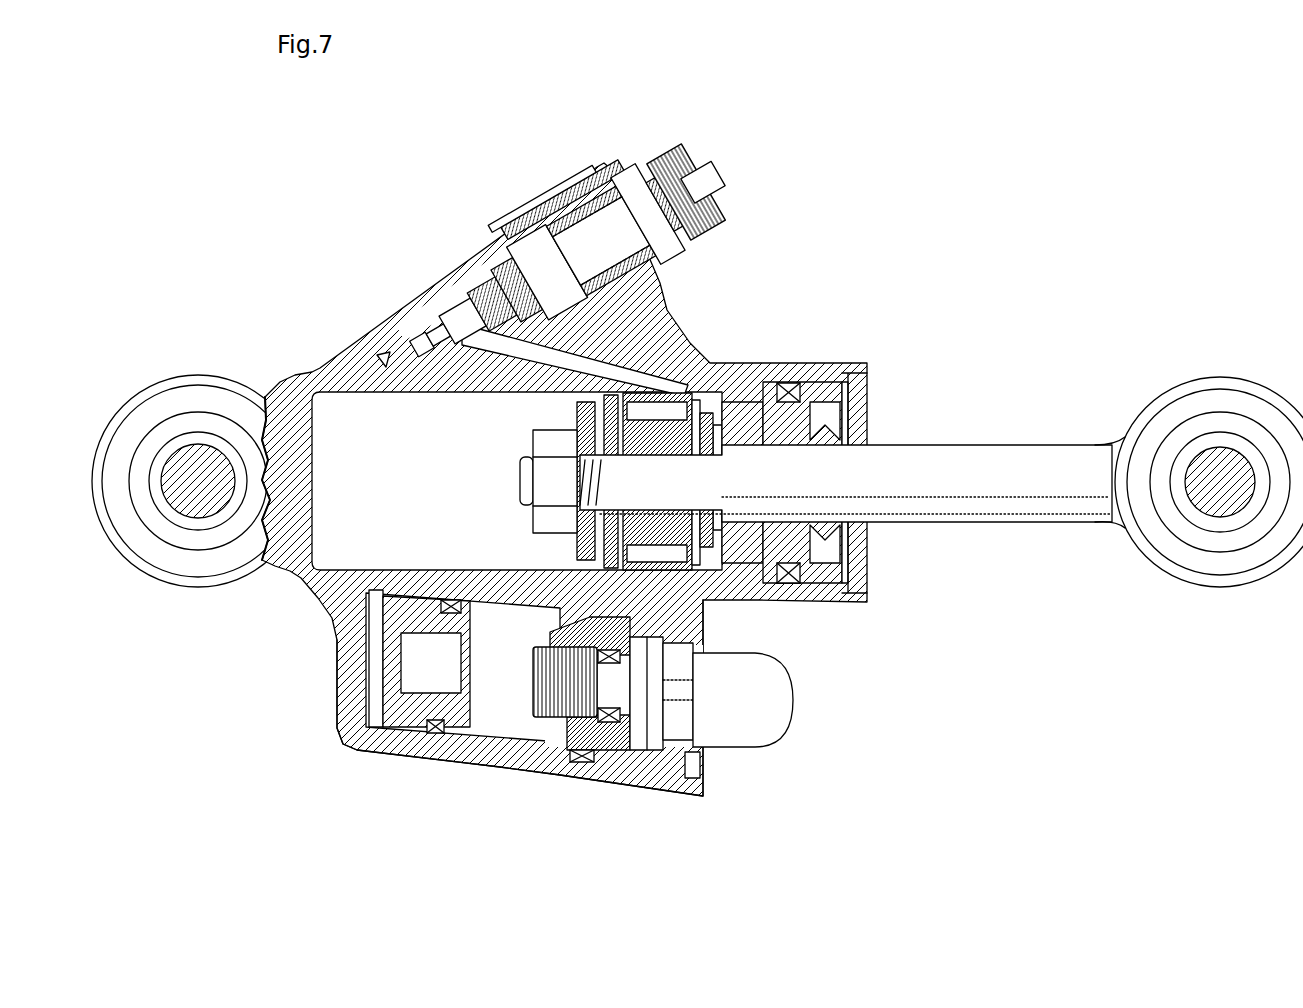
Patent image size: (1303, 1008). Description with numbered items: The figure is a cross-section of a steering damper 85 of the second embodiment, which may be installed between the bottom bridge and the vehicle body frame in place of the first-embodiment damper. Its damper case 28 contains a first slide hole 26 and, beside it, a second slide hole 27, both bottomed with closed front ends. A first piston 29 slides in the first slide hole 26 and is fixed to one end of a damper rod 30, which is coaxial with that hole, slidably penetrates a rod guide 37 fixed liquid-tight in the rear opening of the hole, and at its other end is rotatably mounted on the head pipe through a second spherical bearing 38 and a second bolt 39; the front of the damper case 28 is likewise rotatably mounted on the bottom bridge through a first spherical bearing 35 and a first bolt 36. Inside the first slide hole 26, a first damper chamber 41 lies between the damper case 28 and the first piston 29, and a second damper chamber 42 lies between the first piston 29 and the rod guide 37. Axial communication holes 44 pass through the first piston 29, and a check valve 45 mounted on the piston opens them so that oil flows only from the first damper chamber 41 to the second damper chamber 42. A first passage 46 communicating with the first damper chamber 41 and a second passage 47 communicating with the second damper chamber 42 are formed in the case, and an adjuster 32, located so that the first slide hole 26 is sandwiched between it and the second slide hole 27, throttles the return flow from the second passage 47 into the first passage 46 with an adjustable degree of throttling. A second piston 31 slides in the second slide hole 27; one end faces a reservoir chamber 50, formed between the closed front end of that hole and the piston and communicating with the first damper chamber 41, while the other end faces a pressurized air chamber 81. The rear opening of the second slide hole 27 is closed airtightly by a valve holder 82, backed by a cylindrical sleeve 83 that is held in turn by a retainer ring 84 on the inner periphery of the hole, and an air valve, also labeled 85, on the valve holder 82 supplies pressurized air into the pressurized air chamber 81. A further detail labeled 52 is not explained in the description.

The first slide hole 26 is at (392, 400).
The second slide hole 27 is at (498, 737).
The damper case 28 is at (330, 603).
The first piston 29 is at (653, 532).
The damper rod 30 is at (982, 460).
The second piston 31 is at (405, 723).
The adjuster 32 is at (505, 252).
The first spherical bearing 35 is at (197, 418).
The first bolt 36 is at (193, 505).
The rod guide 37 is at (820, 393).
The second spherical bearing 38 is at (1218, 420).
The second bolt 39 is at (1220, 503).
The first damper chamber 41 is at (440, 494).
The second damper chamber 42 is at (730, 382).
The communication holes 44 is at (655, 393).
The check valve 45 is at (710, 393).
The first passage 46 is at (388, 352).
The second passage 47 is at (510, 370).
The reservoir chamber 50 is at (362, 695).
The weld seam 52 is at (333, 590).
The pressurized air chamber 81 is at (515, 707).
The valve holder 82 is at (633, 757).
The cylindrical sleeve 83 is at (660, 757).
The retainer ring 84 is at (707, 750).
The steering damper 85 is at (575, 762).